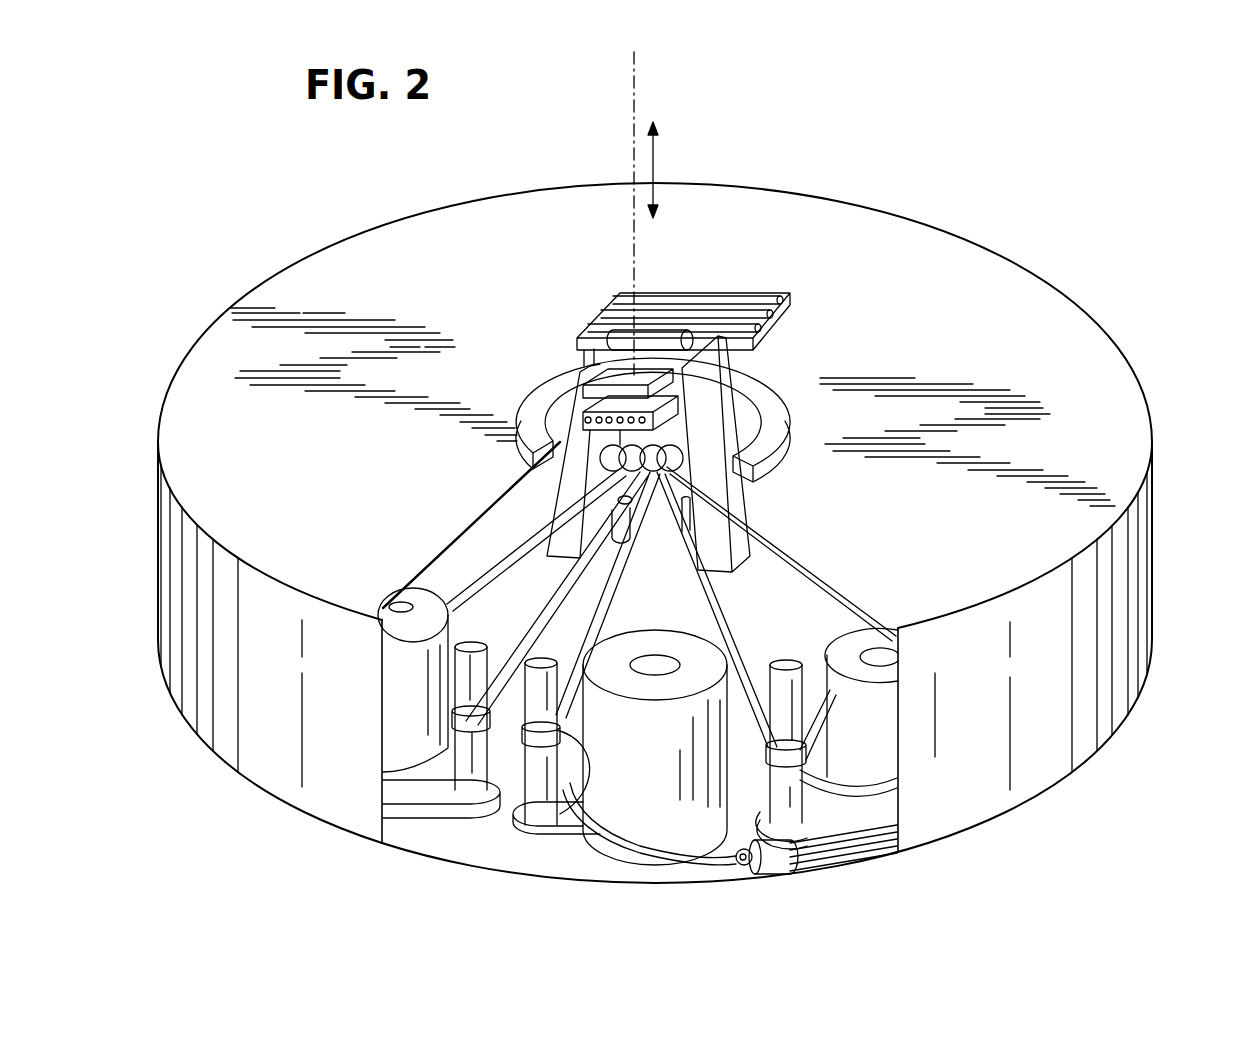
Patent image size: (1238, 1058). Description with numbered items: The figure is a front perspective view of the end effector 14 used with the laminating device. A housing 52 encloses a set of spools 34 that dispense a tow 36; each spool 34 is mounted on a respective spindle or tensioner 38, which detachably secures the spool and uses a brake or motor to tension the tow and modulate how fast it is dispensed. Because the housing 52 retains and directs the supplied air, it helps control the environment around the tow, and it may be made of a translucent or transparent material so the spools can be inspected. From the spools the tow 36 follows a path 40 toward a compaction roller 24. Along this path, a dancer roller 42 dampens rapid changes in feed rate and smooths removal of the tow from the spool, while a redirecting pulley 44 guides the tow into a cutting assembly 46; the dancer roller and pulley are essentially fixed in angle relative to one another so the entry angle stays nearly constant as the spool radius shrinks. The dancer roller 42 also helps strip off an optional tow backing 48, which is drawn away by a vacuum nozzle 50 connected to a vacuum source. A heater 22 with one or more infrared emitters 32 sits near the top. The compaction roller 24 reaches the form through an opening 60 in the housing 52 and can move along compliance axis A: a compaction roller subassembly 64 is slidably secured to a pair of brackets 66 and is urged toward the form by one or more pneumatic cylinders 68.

The end effector 14 is at (970, 161).
The housing 52 is at (1063, 314).
The heater 22 is at (707, 295).
The compaction roller 24 is at (650, 333).
The infrared emitters 32 is at (805, 298).
The compaction roller subassembly 64 is at (615, 368).
The brackets 66 is at (576, 372).
The opening 60 is at (562, 422).
The cutting assembly 46 is at (690, 417).
The redirecting pulley 44 is at (662, 457).
The pneumatic cylinders 68 is at (633, 540).
The tow 36 is at (557, 592).
The path 40 is at (742, 577).
The dancer roller 42 is at (537, 655).
The spools 34 is at (394, 710).
The tensioner 38 is at (650, 663).
The tow backing 48 is at (570, 785).
The vacuum nozzle 50 is at (783, 876).